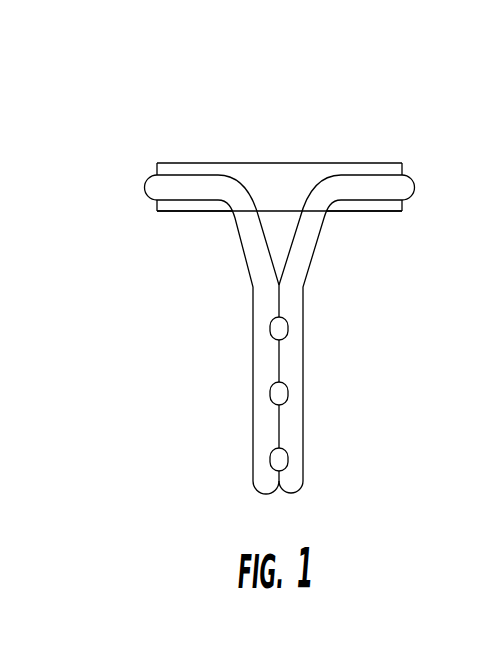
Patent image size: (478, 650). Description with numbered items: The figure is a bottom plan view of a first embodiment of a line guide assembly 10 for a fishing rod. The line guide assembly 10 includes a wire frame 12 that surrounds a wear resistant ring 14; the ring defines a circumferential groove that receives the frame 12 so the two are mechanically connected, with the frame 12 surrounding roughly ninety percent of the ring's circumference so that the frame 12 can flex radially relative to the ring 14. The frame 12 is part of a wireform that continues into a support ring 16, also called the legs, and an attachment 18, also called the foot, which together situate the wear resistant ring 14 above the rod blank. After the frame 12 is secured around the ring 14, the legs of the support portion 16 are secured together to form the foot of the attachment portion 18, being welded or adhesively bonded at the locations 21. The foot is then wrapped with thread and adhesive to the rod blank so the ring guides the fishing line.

The line guide assembly 10 is at (207, 135).
The wire frame 12 is at (414, 187).
The wear resistant ring 14 is at (320, 163).
The support ring 16 is at (318, 242).
The attachment 18 is at (304, 405).
The weld or adhesive bond 21 is at (270, 460).